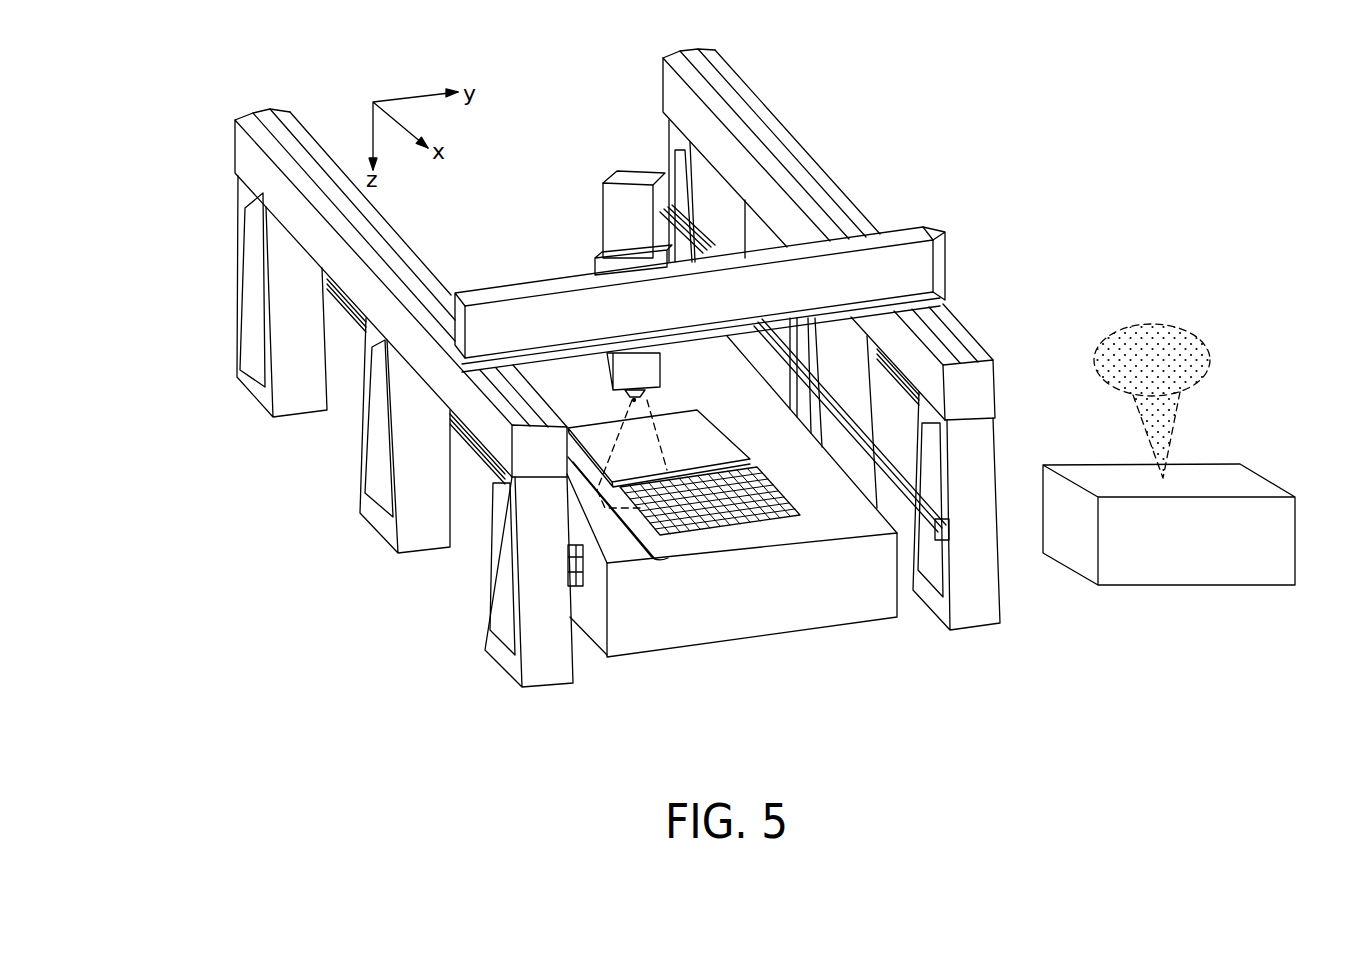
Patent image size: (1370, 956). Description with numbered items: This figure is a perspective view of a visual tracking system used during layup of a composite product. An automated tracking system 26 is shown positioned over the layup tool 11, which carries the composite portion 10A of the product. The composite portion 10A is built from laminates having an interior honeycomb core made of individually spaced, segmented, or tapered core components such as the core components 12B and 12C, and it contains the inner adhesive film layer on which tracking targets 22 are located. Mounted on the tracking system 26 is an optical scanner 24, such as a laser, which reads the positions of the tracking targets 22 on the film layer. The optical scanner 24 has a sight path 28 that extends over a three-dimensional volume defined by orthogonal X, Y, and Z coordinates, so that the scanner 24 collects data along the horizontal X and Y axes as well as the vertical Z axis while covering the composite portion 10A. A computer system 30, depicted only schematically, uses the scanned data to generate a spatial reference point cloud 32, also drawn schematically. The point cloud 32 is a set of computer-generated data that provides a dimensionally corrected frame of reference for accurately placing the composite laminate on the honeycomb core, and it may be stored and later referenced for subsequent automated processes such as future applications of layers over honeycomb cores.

The composite portion 10A is at (812, 517).
The layup tool 11 is at (702, 630).
The core component 12B is at (707, 433).
The core component 12C is at (609, 377).
The tracking targets 22 is at (747, 518).
The optical scanner 24 is at (612, 223).
The automated tracking system 26 is at (253, 292).
The sight path 28 is at (662, 437).
The computer system 30 is at (1275, 539).
The spatial reference point cloud 32 is at (1210, 368).